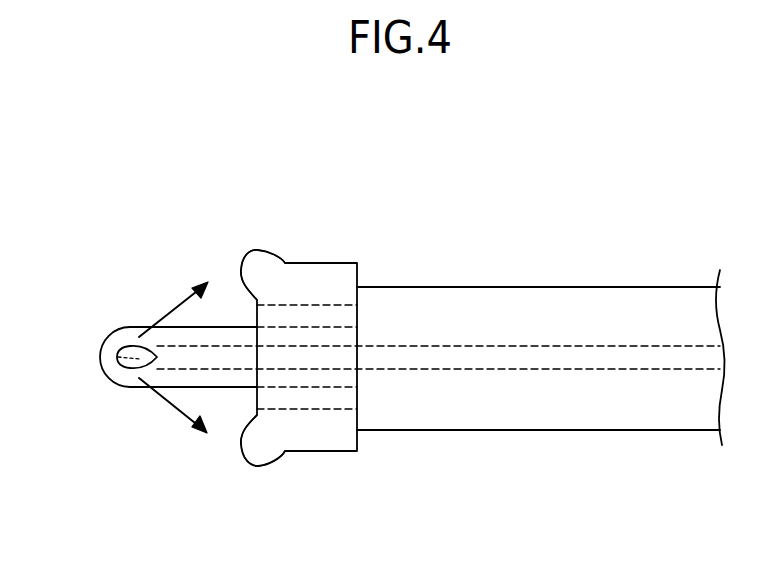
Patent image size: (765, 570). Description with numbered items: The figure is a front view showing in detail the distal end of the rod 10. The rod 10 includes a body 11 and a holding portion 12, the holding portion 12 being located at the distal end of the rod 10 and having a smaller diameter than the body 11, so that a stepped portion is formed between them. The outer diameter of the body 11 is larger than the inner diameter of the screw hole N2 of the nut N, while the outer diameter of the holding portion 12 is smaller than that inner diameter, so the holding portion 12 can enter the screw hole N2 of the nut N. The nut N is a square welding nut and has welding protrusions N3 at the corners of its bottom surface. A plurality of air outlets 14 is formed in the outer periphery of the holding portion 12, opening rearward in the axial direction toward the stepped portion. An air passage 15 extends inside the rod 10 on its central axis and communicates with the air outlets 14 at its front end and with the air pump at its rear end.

The rod 10 is at (622, 287).
The body 11 is at (540, 302).
The holding portion 12 is at (127, 340).
The air outlets 14 is at (127, 360).
The air passage 15 is at (443, 360).
The nut N is at (327, 452).
The screw hole N2 is at (318, 408).
The welding protrusions N3 is at (257, 262).